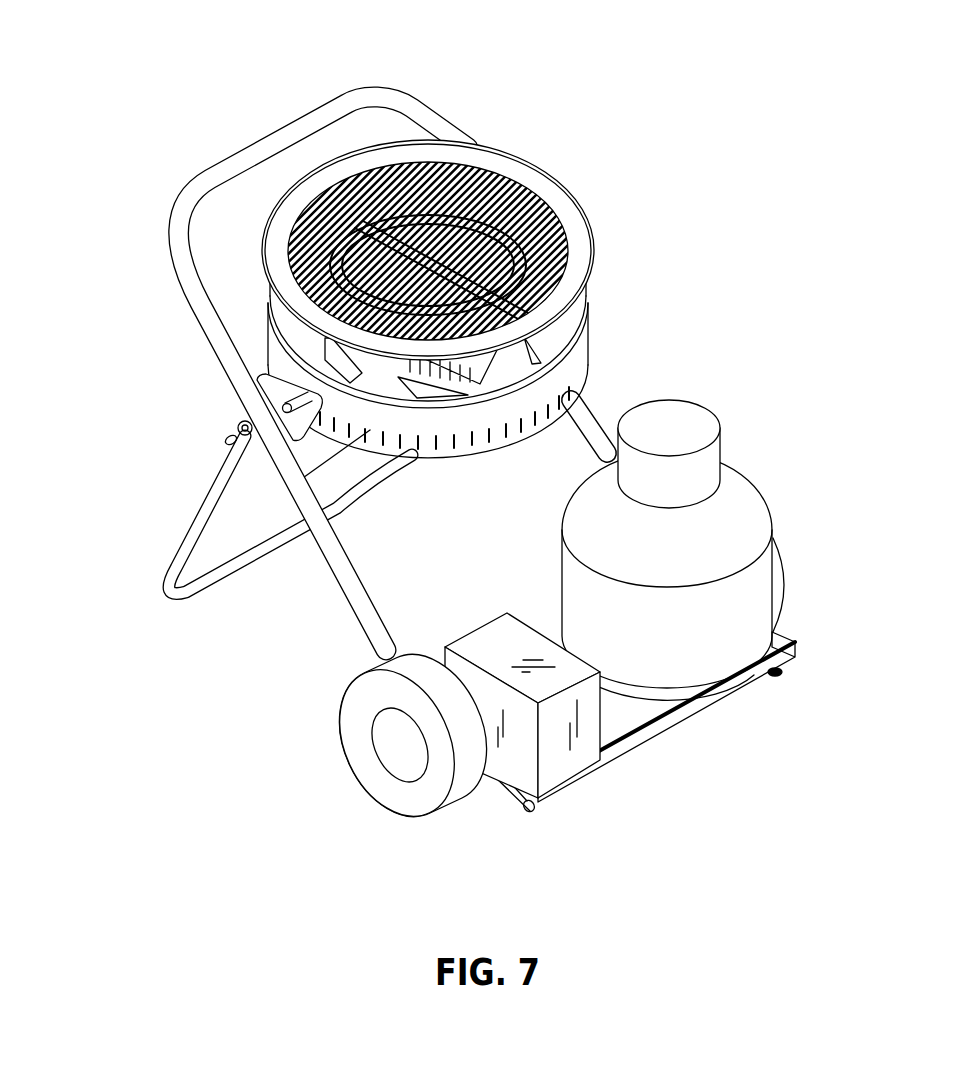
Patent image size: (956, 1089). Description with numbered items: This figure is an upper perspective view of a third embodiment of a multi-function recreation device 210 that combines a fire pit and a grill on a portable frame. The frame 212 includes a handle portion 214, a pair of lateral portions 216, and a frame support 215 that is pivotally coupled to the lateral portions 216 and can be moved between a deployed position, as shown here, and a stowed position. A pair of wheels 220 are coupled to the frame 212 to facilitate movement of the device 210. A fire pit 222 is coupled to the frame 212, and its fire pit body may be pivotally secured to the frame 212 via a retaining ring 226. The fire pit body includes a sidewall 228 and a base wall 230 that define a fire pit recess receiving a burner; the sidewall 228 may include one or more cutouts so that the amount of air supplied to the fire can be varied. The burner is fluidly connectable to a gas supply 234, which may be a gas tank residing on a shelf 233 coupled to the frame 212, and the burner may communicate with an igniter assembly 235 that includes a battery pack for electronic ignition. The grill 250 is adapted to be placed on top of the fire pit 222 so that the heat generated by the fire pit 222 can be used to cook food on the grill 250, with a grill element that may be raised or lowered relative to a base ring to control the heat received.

The device 210 is at (221, 80).
The frame 212 is at (172, 167).
The handle portion 214 is at (315, 112).
The frame support 215 is at (168, 546).
The lateral portions 216 is at (332, 565).
The wheels 220 is at (395, 788).
The fire pit 222 is at (604, 229).
The retaining ring 226 is at (447, 427).
The sidewall 228 is at (570, 322).
The base wall 230 is at (507, 445).
The shelf 233 is at (641, 734).
The gas supply 234 is at (743, 446).
The igniter assembly 235 is at (487, 632).
The grill 250 is at (451, 170).